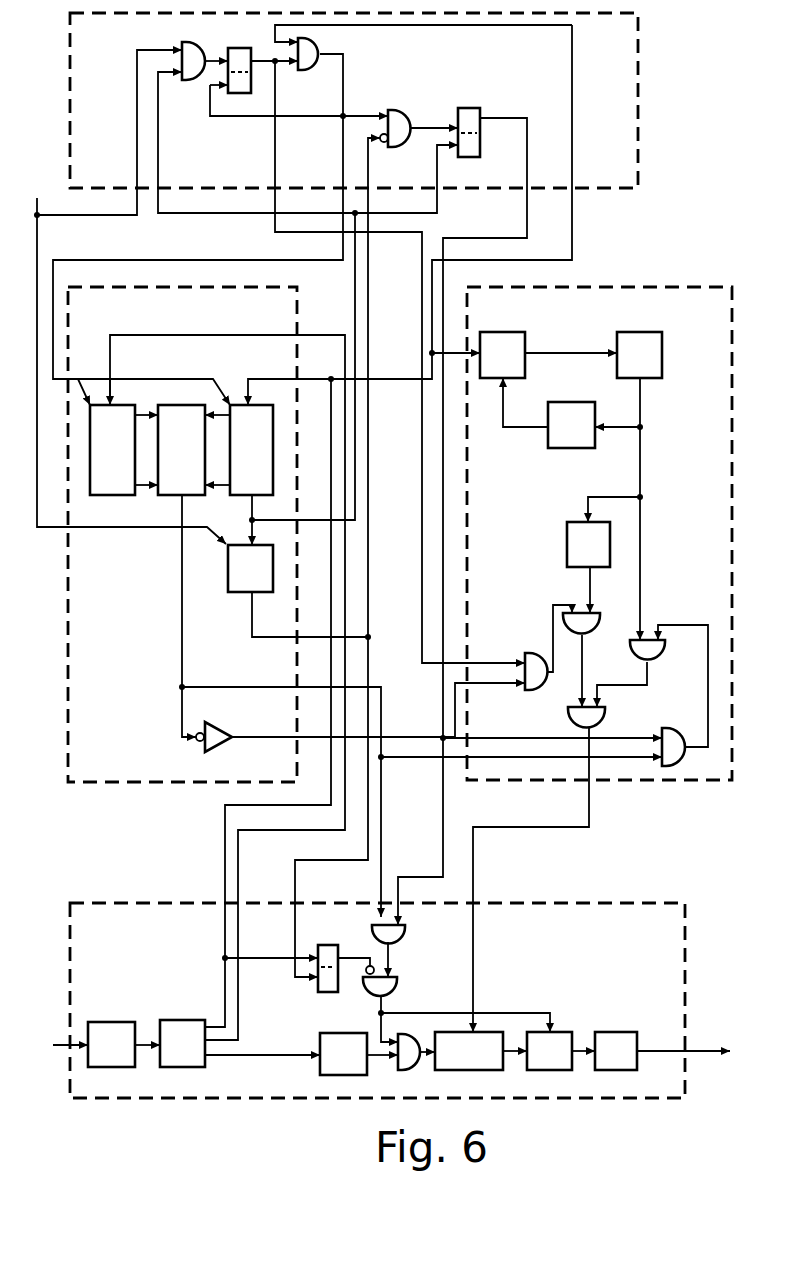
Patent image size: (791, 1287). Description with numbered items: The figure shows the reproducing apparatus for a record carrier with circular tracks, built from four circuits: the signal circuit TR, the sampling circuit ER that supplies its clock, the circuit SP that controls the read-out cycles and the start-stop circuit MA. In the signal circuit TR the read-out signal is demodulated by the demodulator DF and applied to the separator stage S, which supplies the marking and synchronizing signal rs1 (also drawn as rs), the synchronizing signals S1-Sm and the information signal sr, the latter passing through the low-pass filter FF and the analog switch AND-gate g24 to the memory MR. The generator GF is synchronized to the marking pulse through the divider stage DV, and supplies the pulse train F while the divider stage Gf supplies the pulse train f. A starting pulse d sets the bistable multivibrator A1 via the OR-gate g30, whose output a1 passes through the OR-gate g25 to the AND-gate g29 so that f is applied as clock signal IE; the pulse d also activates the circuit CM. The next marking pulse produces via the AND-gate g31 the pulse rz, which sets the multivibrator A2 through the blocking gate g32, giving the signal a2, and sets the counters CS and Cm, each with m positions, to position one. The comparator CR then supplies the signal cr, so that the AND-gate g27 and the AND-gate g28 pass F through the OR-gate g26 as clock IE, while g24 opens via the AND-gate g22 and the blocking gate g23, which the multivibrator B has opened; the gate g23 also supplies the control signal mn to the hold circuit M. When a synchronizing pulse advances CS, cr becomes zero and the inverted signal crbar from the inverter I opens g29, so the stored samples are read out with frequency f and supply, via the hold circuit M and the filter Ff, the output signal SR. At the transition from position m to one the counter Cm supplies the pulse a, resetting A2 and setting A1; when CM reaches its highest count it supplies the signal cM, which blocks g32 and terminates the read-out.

The start-stop circuit MA is at (638, 125).
The cycle control circuit SP is at (86, 782).
The sampling circuit ER is at (720, 287).
The signal circuit TR is at (108, 903).
The bistable multivibrator A1 is at (254, 34).
The bistable multivibrator A2 is at (472, 108).
The OR-gate g30 is at (197, 76).
The AND-gate g31 is at (326, 36).
The blocking gate g32 is at (395, 110).
The counting circuit CS is at (123, 495).
The comparator circuit CR is at (160, 495).
The counting circuit Cm is at (240, 495).
The track counter circuit CM is at (228, 566).
The inverter I is at (213, 748).
The generator GF is at (654, 332).
The divider stage DV is at (586, 386).
The divider stage Gf is at (567, 540).
The OR-gate g25 is at (545, 684).
The OR-gate g26 is at (603, 718).
The AND-gate g27 is at (680, 730).
The AND-gate g28 is at (657, 660).
The AND-gate g29 is at (597, 630).
The demodulator DF is at (130, 1006).
The separator stage S is at (192, 1004).
The bistable multivibrator B is at (332, 945).
The low-pass filter FF is at (350, 1018).
The AND-gate g22 is at (402, 938).
The blocking gate g23 is at (396, 990).
The AND-gate g24 is at (404, 1036).
The memory MR is at (492, 1070).
The hold circuit M is at (538, 1070).
The filter Ff is at (628, 1070).
The starting pulse d is at (130, 297).
The pulse a is at (158, 193).
The output signal of multivibrator A1 a1 is at (466, 663).
The output signal of multivibrator A2 a2 is at (527, 190).
The pulse rz is at (343, 190).
The marking and synchronizing signal rs1 is at (572, 190).
The marking pulse signal rs is at (222, 900).
The synchronizing signals S1-Sm is at (294, 335).
The signal cM is at (368, 190).
The comparator signal cr is at (296, 686).
The inverted comparator signal crbar is at (298, 737).
The pulse train of frequency F is at (641, 402).
The pulse train of frequency f is at (591, 592).
The clock signal IE is at (589, 788).
The read-out information signal sr is at (278, 1056).
The control signal mn is at (496, 1012).
The number of counting positions m is at (182, 450).
The output signal SR is at (690, 1050).